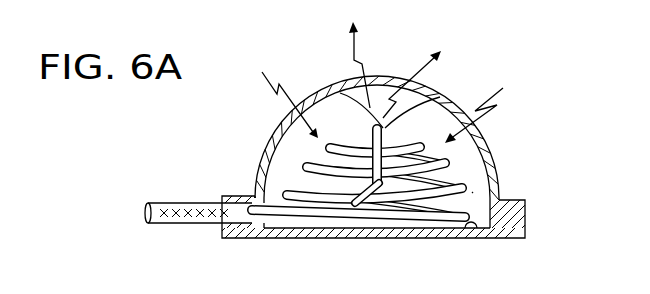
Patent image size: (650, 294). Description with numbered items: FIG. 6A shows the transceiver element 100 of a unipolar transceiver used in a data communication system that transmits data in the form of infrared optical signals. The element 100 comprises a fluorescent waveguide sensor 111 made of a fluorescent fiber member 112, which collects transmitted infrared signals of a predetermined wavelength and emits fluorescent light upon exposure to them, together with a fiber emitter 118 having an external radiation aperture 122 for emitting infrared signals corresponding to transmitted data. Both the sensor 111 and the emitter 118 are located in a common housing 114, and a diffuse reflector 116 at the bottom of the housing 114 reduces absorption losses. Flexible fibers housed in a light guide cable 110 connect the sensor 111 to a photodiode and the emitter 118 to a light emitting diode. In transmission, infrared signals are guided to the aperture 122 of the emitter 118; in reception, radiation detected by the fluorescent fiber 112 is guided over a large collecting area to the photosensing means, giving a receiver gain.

The transceiver element 100 is at (255, 135).
The light guide cable 110 is at (167, 203).
The fluorescent waveguide sensor 111 is at (473, 192).
The fluorescent fiber member 112 is at (450, 180).
The housing 114 is at (512, 220).
The diffuse reflector 116 is at (472, 228).
The fiber emitter 118 is at (434, 113).
The external radiation aperture 122 is at (372, 124).